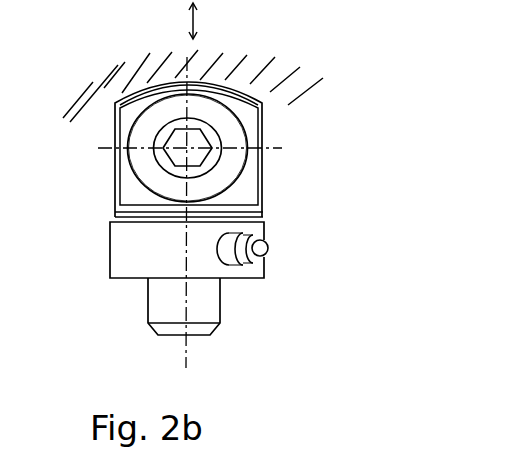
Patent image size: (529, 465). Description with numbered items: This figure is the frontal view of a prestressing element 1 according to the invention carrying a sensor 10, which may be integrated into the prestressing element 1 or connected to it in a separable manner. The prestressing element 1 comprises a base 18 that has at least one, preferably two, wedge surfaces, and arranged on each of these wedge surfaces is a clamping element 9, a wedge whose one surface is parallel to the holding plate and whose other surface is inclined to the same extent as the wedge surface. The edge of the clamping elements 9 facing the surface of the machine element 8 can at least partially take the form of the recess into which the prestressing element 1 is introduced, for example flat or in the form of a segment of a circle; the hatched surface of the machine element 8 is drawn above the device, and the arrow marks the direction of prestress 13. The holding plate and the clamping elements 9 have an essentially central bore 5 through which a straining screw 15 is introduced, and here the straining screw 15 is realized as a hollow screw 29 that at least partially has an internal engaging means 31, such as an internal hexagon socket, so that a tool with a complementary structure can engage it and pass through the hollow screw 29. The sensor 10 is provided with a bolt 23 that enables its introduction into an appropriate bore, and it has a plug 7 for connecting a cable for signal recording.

The prestressing element 1 is at (362, 85).
The central bore 5 is at (158, 128).
The plug 7 is at (256, 250).
The surface of the machine element 8 is at (115, 93).
The clamping element 9 is at (130, 185).
The sensor 10 is at (128, 262).
The direction of prestress 13 is at (212, 21).
The straining screw 15 is at (222, 172).
The base 18 is at (125, 213).
The bolt 23 is at (210, 302).
The hollow screw 29 is at (188, 148).
The engaging means 31 is at (213, 127).